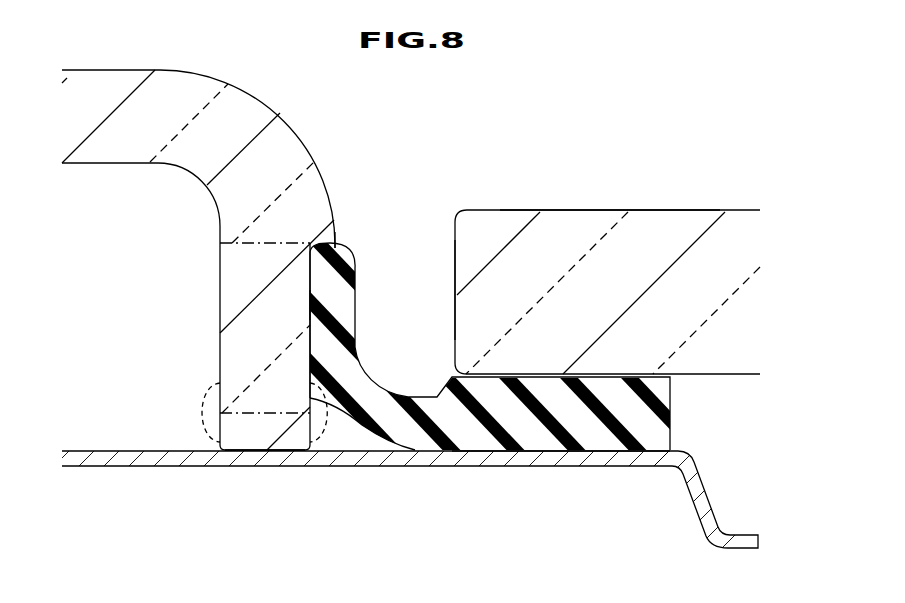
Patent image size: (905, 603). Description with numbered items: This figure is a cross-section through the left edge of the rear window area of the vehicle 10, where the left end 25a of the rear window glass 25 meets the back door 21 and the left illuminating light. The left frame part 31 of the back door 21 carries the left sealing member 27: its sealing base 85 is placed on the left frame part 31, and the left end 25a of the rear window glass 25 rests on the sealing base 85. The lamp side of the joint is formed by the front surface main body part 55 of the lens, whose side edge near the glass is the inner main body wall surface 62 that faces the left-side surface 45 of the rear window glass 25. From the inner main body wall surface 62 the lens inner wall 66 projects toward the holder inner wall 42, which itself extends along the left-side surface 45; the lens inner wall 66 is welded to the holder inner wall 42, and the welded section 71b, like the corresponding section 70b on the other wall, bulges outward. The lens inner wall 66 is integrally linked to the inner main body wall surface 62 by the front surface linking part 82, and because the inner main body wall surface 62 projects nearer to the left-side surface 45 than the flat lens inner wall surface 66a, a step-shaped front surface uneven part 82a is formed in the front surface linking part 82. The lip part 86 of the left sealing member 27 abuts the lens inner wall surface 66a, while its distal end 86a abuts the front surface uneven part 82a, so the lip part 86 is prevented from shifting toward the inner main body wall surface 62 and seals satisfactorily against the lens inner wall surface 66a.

The vehicle 10 is at (563, 88).
The back door 21 is at (700, 470).
The rear window glass 25 is at (671, 209).
The left end of rear window glass 25a is at (583, 210).
The left sealing member 27 is at (495, 537).
The left frame part 31 is at (588, 450).
The holder inner wall 42 is at (238, 443).
The left-side surface of rear window glass 45 is at (455, 307).
The front surface main body part 55 is at (173, 87).
The inner main body wall surface 62 is at (333, 205).
The lens inner wall 66 is at (222, 311).
The lens inner wall surface 66a is at (310, 292).
The bead portion 70b is at (327, 447).
The welded section 71b is at (200, 405).
The front surface linking part 82 is at (288, 243).
The front surface uneven part 82a is at (346, 246).
The sealing base 85 is at (517, 433).
The lip part 86 is at (345, 318).
The distal end of lip part 86a is at (349, 263).